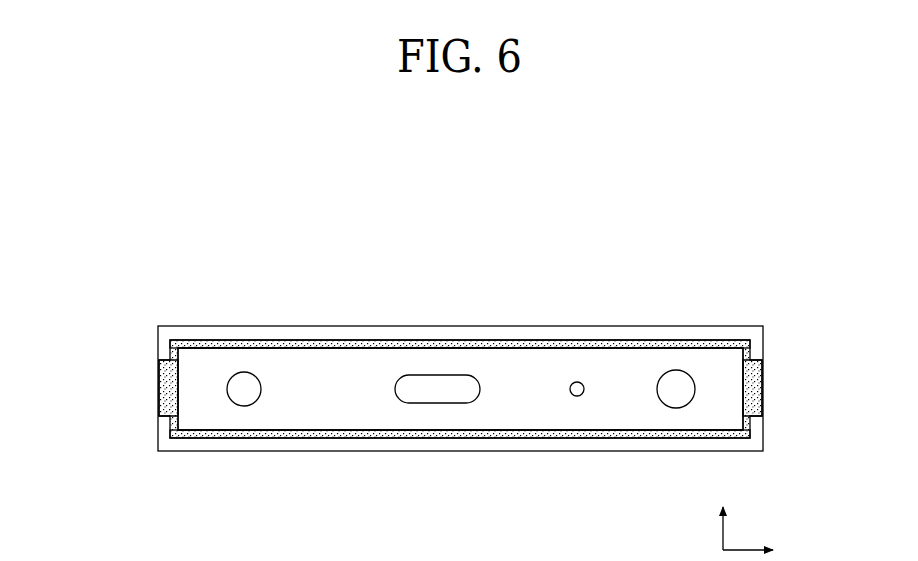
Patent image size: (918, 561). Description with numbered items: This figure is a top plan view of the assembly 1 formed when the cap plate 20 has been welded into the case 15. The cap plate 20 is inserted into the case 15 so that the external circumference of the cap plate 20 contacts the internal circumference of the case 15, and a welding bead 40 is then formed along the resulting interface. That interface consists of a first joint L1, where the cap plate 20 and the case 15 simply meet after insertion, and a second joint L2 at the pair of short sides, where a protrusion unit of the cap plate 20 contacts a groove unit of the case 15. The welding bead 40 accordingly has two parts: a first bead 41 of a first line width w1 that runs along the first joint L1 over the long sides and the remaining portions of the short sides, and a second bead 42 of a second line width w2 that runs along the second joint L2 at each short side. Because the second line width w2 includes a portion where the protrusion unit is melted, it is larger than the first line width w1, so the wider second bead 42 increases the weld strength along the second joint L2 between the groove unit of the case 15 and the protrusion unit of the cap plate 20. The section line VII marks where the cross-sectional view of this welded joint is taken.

The battery pack 1 is at (484, 224).
The case 15 is at (593, 453).
The cap plate 20 is at (507, 365).
The welding bead 40 is at (283, 173).
The first bead 41 is at (358, 342).
The second bead 42 is at (155, 397).
The first joint L1 is at (440, 342).
The second joint L2 is at (152, 358).
The first line width w1 is at (628, 377).
The second line width w2 is at (207, 404).
The line VII- VII is at (85, 388).